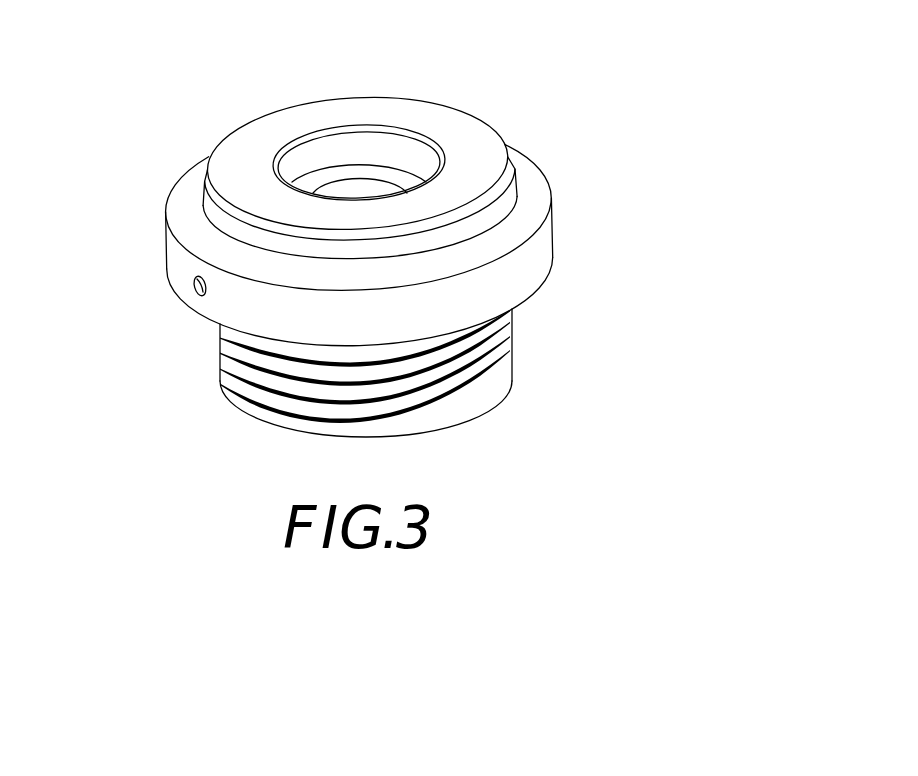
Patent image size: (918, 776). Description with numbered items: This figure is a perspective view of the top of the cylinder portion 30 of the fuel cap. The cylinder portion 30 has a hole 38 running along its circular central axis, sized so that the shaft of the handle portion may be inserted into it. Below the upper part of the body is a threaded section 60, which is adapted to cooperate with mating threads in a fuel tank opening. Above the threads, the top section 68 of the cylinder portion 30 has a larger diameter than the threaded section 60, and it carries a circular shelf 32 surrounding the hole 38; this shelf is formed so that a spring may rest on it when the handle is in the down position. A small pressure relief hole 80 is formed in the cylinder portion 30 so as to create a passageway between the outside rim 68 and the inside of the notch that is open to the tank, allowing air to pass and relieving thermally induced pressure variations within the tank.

The cylinder portion 30 is at (598, 179).
The circular shelf 32 is at (399, 177).
The hole 38 is at (360, 190).
The threaded section 60 is at (487, 377).
The top section 68 is at (543, 258).
The pressure relief hole 80 is at (190, 292).